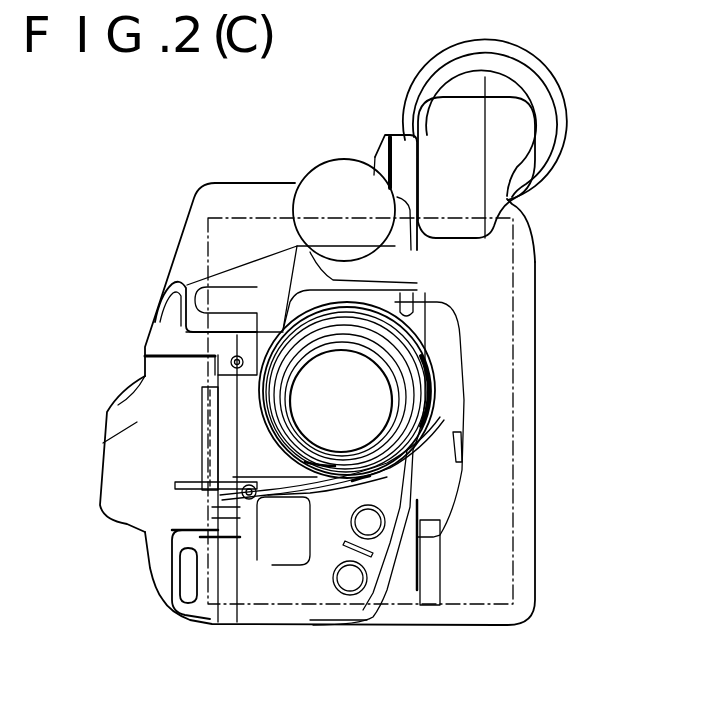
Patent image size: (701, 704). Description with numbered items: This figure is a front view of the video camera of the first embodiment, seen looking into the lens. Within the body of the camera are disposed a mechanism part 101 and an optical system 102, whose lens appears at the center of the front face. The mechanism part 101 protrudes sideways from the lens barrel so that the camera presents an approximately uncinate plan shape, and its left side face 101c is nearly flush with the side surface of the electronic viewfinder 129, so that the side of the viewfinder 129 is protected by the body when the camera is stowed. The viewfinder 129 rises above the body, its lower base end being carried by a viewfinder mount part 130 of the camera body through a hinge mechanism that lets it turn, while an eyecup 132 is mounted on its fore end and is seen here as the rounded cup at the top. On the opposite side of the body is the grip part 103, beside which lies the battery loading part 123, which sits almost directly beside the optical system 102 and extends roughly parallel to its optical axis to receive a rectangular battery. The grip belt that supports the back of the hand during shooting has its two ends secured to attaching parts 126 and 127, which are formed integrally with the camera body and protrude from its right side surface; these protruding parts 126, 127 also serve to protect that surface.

The mechanism part 101 is at (498, 430).
The left side face 101c is at (535, 513).
The optical system 102 is at (367, 385).
The grip part 103 is at (170, 303).
The battery loading part 123 is at (207, 413).
The attaching part 126 is at (188, 614).
The attaching part 127 is at (117, 458).
The electronic viewfinder 129 is at (457, 92).
The viewfinder mount part 130 is at (402, 150).
The eyecup 132 is at (560, 108).